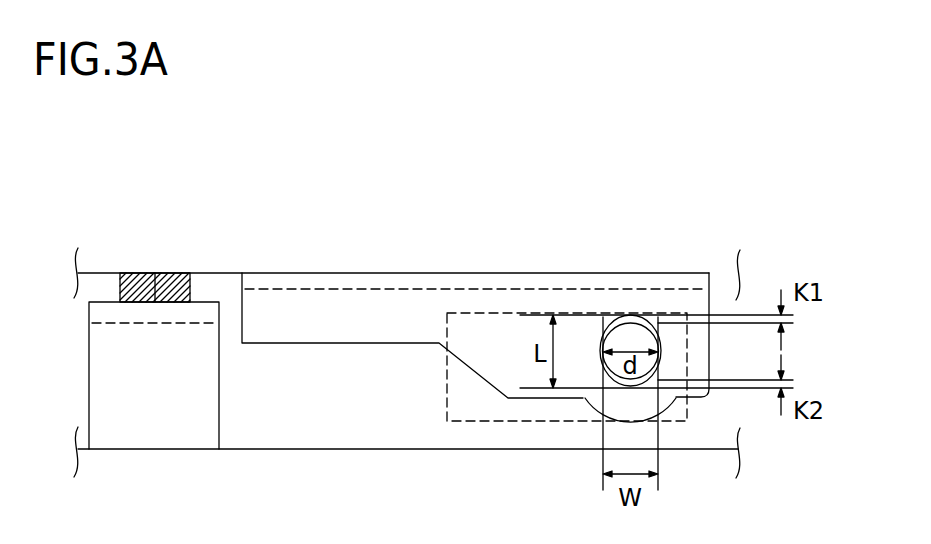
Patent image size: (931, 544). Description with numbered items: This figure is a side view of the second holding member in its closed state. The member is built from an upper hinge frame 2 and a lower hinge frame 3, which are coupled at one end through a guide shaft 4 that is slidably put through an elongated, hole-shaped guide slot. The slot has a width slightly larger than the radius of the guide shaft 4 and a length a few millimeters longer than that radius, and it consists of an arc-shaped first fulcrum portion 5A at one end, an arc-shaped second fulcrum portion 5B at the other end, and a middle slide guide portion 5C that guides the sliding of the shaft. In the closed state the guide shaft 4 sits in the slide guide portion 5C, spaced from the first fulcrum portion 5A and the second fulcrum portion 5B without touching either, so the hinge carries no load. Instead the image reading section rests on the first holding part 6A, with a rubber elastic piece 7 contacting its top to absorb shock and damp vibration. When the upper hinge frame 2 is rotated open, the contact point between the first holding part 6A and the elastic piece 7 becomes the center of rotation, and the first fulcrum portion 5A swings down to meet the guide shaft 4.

The upper hinge frame 2 is at (368, 278).
The lower hinge frame 3 is at (473, 408).
The guide shaft 4 is at (634, 338).
The first fulcrum portion 5A is at (627, 318).
The second fulcrum portion 5B is at (630, 402).
The slide guide portion 5C is at (600, 352).
The first holding part 6A is at (153, 427).
The elastic piece 7 is at (160, 273).